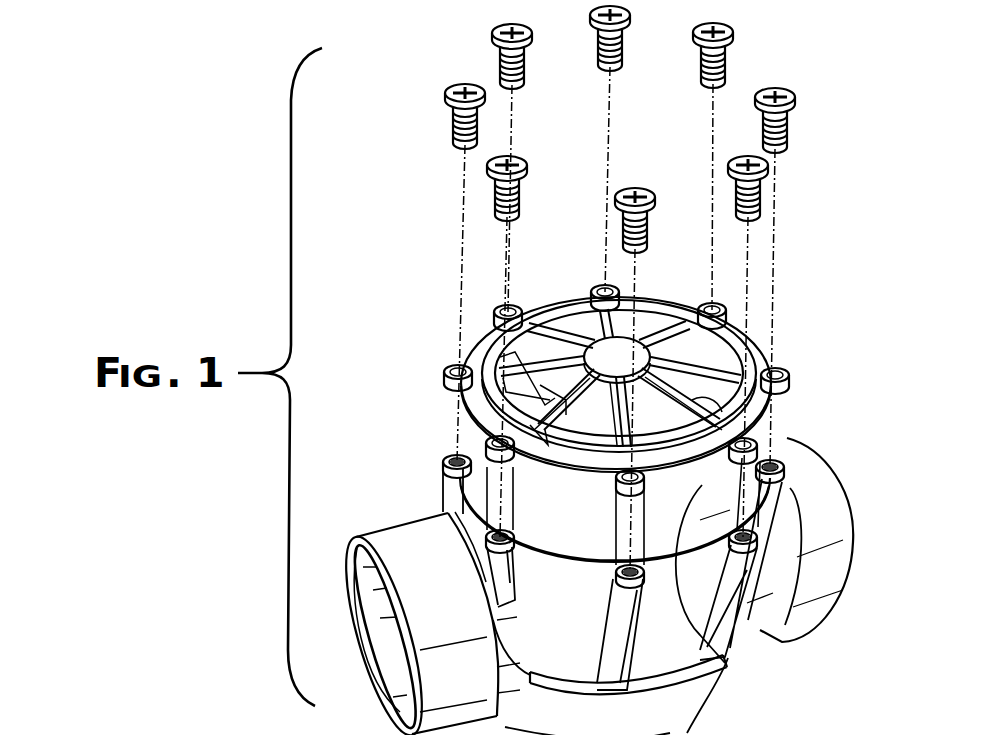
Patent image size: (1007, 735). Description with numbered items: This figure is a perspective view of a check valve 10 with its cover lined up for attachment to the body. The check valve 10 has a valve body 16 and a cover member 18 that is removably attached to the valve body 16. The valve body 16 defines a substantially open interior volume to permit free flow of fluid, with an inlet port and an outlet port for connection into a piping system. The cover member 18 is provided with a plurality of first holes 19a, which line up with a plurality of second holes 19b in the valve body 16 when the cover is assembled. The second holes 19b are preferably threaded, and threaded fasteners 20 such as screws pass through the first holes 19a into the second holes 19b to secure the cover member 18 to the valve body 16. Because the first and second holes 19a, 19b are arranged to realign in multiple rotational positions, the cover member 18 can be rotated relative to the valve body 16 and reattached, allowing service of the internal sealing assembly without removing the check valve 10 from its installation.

The check valve 10 is at (828, 242).
The valve body 16 is at (465, 512).
The cover member 18 is at (505, 350).
The first holes 19a is at (768, 368).
The second holes 19b is at (758, 527).
The threaded fasteners 20 is at (732, 30).